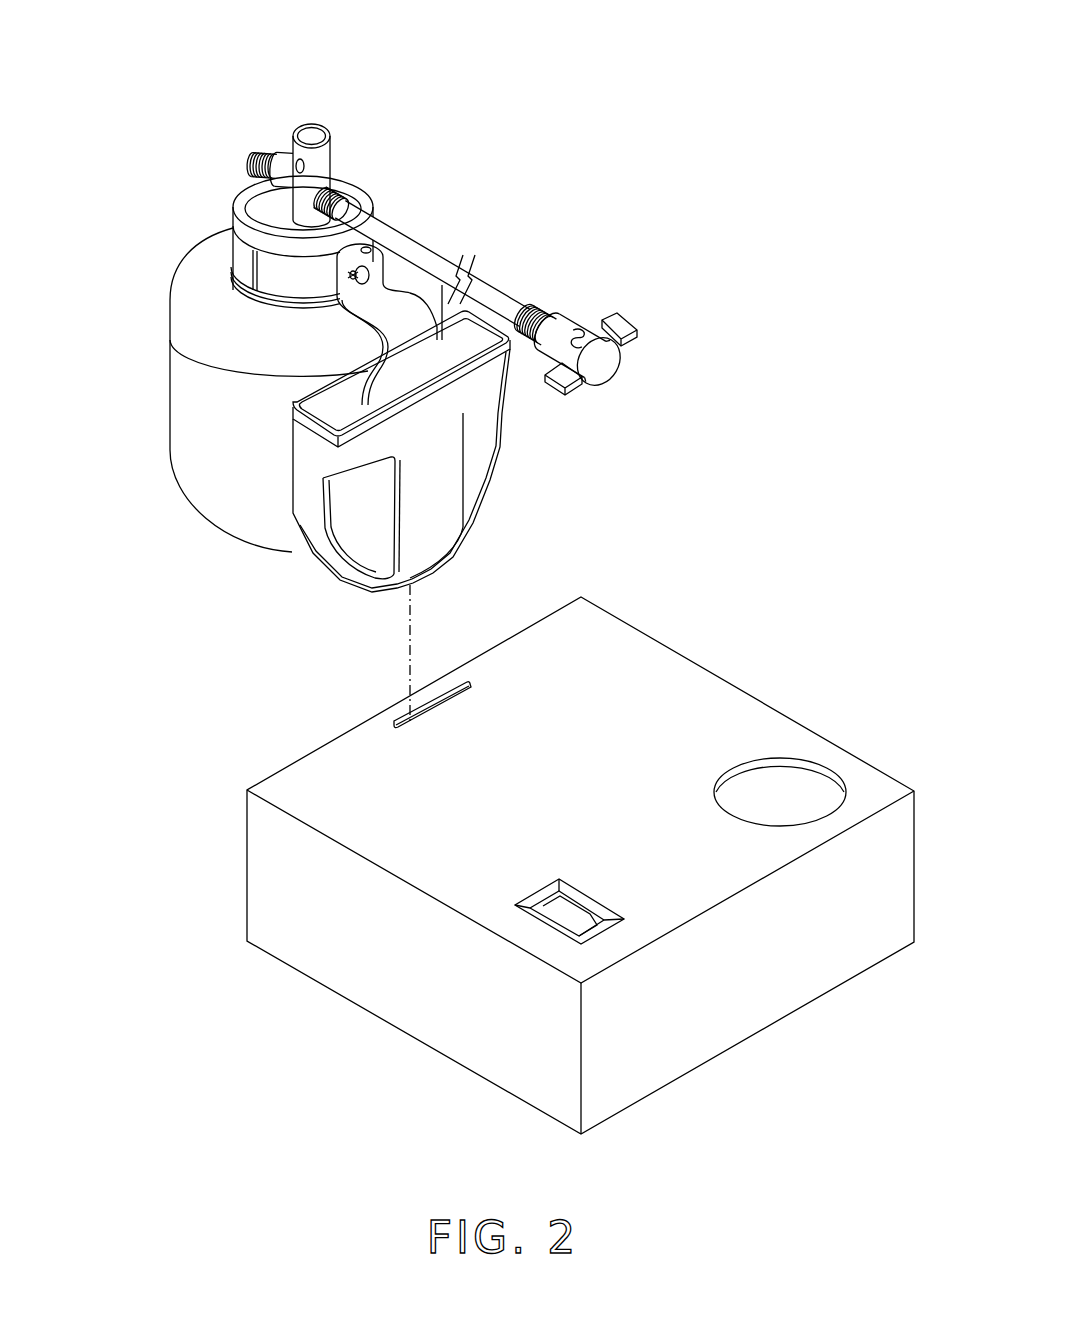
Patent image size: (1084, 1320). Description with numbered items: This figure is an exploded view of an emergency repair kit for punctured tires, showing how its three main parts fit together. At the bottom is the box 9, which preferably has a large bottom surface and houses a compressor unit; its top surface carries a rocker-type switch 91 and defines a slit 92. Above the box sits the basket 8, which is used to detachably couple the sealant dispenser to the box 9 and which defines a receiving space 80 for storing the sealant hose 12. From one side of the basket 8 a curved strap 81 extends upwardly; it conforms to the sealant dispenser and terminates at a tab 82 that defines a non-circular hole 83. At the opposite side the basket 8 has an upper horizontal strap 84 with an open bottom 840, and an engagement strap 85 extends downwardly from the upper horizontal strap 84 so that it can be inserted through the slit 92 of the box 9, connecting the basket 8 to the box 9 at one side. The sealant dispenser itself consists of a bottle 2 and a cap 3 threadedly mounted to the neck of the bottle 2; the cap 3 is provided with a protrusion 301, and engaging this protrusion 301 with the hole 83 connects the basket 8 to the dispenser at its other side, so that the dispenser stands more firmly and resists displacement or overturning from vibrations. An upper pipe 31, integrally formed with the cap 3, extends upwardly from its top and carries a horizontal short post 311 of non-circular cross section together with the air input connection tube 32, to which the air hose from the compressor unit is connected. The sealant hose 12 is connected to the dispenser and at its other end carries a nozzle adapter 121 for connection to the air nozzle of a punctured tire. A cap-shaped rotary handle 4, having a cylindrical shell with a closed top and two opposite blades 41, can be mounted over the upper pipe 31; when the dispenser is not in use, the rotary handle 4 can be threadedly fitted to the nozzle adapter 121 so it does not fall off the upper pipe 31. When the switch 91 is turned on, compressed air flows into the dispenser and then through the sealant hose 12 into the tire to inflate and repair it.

The bottle 2 is at (220, 468).
The cap 3 is at (240, 240).
The protrusion 301 is at (365, 252).
The upper pipe 31 is at (320, 177).
The horizontal short post 311 is at (299, 160).
The air input connection tube 32 is at (252, 163).
The sealant hose 12 is at (493, 293).
The nozzle adapter 121 is at (543, 308).
The rotary handle 4 is at (607, 360).
The blades 41 is at (623, 327).
The basket 8 is at (315, 525).
The receiving space 80 is at (332, 413).
The curved strap 81 is at (390, 303).
The tab 82 is at (366, 262).
The non-circular hole 83 is at (356, 274).
The upper horizontal strap 84 is at (483, 383).
The engagement strap 85 is at (435, 507).
The open bottom 840 is at (357, 588).
The box 9 is at (376, 978).
The rocker-type switch 91 is at (573, 927).
The slit 92 is at (390, 720).